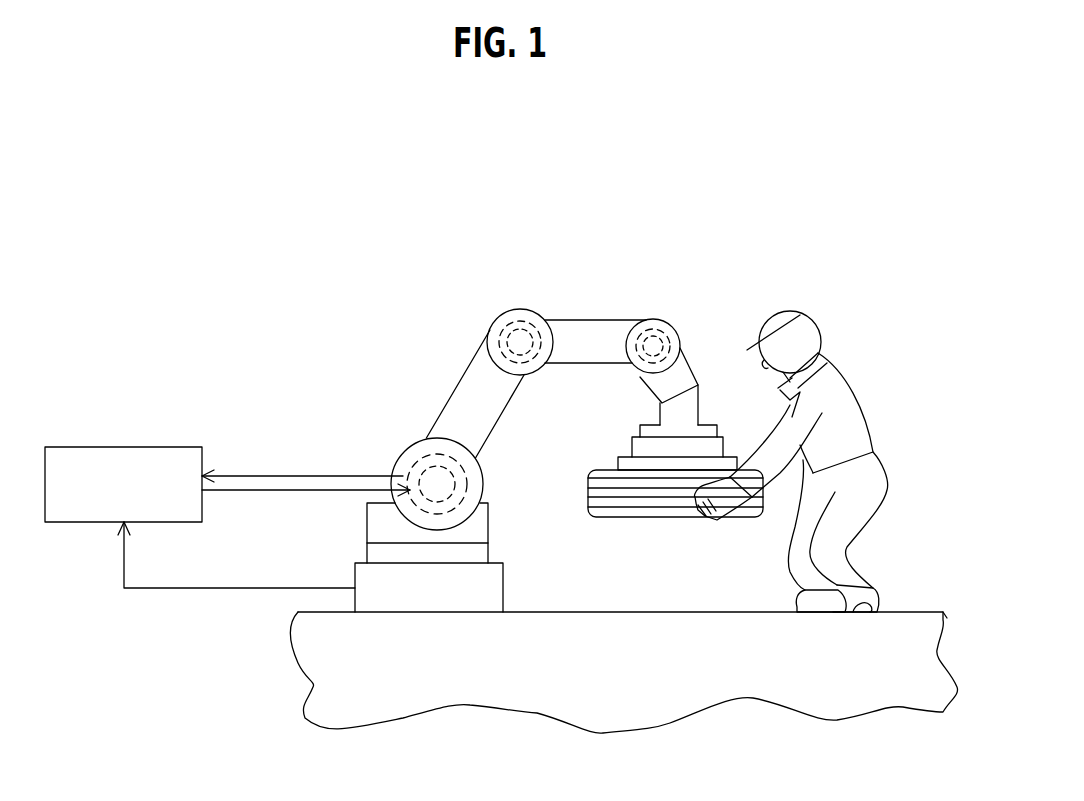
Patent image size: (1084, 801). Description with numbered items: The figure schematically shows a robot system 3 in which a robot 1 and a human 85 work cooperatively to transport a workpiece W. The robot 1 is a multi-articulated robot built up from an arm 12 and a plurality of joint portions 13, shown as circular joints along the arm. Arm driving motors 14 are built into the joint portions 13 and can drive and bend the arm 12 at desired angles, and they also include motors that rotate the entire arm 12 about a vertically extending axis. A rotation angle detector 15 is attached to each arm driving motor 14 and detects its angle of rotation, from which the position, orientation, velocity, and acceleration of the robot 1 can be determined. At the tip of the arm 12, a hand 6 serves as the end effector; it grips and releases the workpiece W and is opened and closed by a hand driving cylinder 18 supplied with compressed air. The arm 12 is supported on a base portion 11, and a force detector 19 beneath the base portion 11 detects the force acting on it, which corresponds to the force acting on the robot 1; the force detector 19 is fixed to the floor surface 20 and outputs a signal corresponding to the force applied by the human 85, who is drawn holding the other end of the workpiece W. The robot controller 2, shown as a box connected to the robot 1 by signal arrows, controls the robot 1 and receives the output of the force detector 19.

The robot 1 is at (602, 338).
The robot controller 2 is at (92, 445).
The robot system 3 is at (636, 182).
The hand 6 is at (653, 448).
The base portion 11 is at (367, 550).
The arm 12 is at (457, 385).
The joint portions 13 is at (518, 317).
The arm driving motors 14 is at (532, 320).
The rotation angle detector 15 is at (513, 330).
The hand driving cylinder 18 is at (653, 430).
The force detector 19 is at (355, 578).
The floor surface 20 is at (553, 612).
The human 85 is at (852, 420).
The workpiece W is at (638, 518).